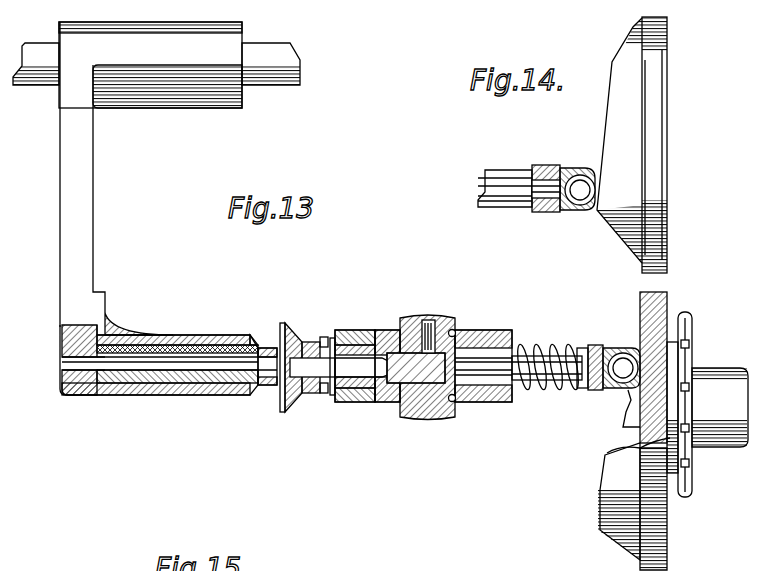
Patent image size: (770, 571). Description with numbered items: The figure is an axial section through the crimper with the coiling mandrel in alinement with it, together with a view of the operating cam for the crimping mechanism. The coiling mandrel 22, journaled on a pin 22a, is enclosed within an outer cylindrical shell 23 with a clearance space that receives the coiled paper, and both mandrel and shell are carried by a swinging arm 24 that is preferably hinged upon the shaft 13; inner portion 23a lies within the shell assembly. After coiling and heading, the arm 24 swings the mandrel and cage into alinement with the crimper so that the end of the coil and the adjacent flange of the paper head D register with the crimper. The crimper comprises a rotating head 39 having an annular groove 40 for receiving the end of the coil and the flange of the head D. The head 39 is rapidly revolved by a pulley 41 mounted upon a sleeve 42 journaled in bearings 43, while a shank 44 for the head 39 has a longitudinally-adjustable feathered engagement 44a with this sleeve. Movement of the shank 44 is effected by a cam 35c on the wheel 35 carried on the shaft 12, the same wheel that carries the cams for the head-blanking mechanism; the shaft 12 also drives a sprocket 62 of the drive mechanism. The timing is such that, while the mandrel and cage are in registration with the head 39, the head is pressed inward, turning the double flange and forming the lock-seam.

In FIG. 13, the shaft 13 is at (282, 52).
In FIG. 13, the swinging arm 24 is at (85, 233).
In FIG. 13, the coiling mandrel 22 is at (240, 338).
In FIG. 13, the pin 22a is at (73, 362).
In FIG. 13, the outer cylindrical shell 23 is at (188, 338).
In FIG. 13, the inner tube 23a is at (195, 388).
In FIG. 13, the paper head D is at (263, 388).
In FIG. 13, the rotating head 39 is at (292, 323).
In FIG. 13, the annular groove 40 is at (303, 400).
In FIG. 13, the bearings 43 is at (347, 403).
In FIG. 13, the sleeve 42 is at (375, 402).
In FIG. 13, the pulley 41 is at (430, 418).
In FIG. 13, the feathered engagement 44a is at (450, 317).
In FIG. 13, the shank 44 is at (528, 357).
In FIG. 14, the shank 44 is at (505, 173).
In FIG. 13, the shaft 12 is at (620, 423).
In FIG. 13, the wheel 35 is at (668, 295).
In FIG. 14, the wheel 35 is at (665, 107).
In FIG. 13, the sprocket 62 is at (693, 332).
In FIG. 14, the cam 35c is at (610, 123).